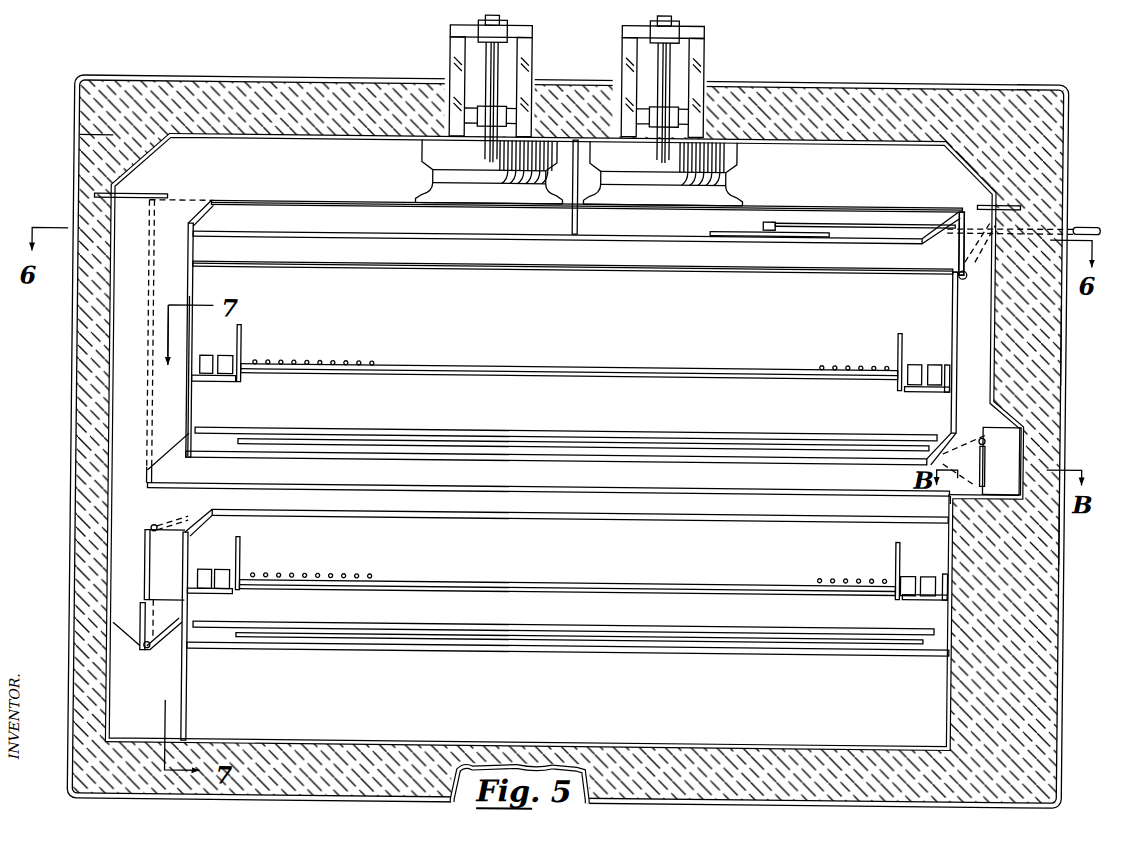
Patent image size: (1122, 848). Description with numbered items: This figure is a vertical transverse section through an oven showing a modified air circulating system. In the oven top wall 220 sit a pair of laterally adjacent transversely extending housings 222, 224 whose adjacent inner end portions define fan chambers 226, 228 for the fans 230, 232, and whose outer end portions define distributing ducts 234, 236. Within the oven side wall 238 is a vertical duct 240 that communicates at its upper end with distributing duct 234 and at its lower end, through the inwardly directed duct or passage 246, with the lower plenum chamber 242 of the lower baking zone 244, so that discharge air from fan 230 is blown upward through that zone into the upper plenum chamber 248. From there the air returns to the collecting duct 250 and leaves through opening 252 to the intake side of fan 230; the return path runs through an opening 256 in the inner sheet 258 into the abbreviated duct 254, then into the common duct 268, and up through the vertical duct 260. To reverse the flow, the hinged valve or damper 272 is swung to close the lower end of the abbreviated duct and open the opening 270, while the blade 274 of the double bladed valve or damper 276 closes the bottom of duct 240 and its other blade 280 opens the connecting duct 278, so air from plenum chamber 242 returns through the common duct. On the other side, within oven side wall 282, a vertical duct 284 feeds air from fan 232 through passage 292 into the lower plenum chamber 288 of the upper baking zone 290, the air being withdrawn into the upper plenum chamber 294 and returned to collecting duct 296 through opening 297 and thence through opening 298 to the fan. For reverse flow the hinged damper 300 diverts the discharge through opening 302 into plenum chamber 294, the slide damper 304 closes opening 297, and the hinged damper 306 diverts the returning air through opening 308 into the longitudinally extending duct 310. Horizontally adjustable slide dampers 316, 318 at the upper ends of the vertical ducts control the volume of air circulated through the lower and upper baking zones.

The oven top wall 220 is at (796, 72).
The housing 222 is at (372, 152).
The housing 224 is at (830, 169).
The fan chamber 226 is at (564, 157).
The fan chamber 228 is at (582, 153).
The fan 230 is at (417, 160).
The fan 232 is at (725, 161).
The distributing duct 234 is at (244, 163).
The distributing duct 236 is at (877, 166).
The oven side wall 238 is at (72, 357).
The vertical duct 240 is at (129, 374).
The lower plenum chamber 242 is at (583, 698).
The lower baking zone 244 is at (581, 556).
The inwardly directed duct 246 is at (183, 691).
The upper plenum chamber 248 is at (497, 506).
The collecting duct 250 is at (287, 216).
The opening 252 is at (488, 209).
The abbreviated duct 254 is at (215, 516).
The opening 256 is at (182, 506).
The inner sheet 258 is at (188, 414).
The vertical duct 260 is at (163, 287).
The common duct section 268 is at (187, 549).
The opening 270 is at (146, 492).
The valve or damper 272 is at (146, 514).
The blade 274 is at (141, 619).
The double bladed valve or damper 276 is at (162, 652).
The connecting duct 278 is at (172, 621).
The blade 280 is at (167, 645).
The oven side wall 282 is at (1063, 340).
The vertical duct 284 is at (979, 353).
The lower plenum chamber 288 is at (580, 476).
The upper baking zone 290 is at (579, 340).
The inwardly directed duct 292 is at (945, 481).
The upper plenum chamber 294 is at (585, 261).
The collecting duct 296 is at (752, 218).
The opening 297 is at (682, 244).
The opening 298 is at (618, 204).
The valve or damper 300 is at (952, 238).
The opening 302 is at (958, 257).
The slide valve or damper 304 is at (743, 231).
The valve or damper 306 is at (1015, 471).
The opening 308 is at (987, 443).
The longitudinally extending duct 310 is at (1063, 523).
The slide damper 316 is at (97, 198).
The slide damper 318 is at (1017, 200).